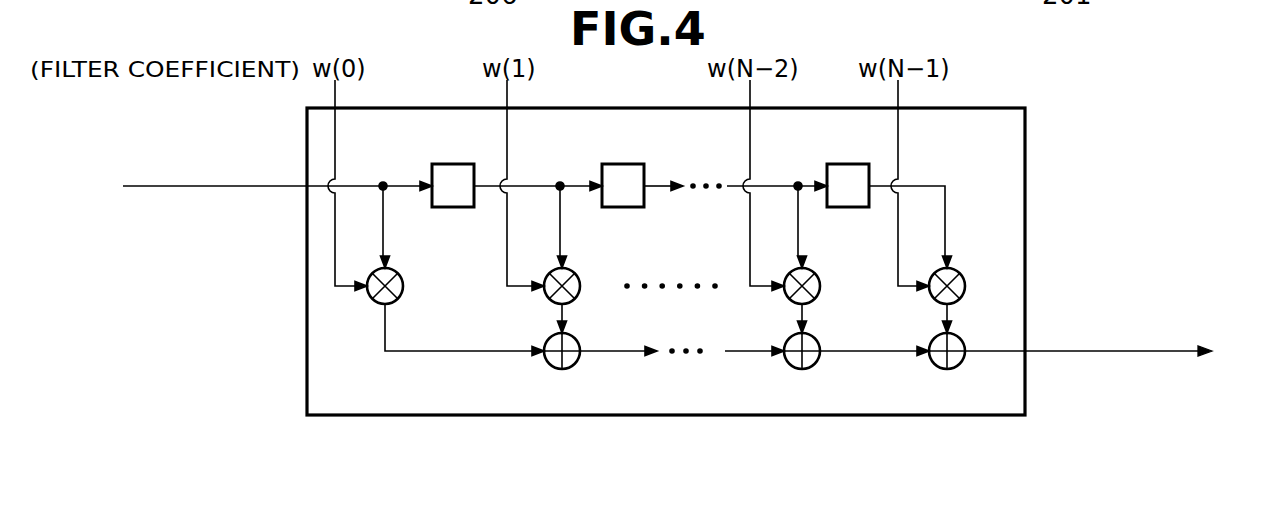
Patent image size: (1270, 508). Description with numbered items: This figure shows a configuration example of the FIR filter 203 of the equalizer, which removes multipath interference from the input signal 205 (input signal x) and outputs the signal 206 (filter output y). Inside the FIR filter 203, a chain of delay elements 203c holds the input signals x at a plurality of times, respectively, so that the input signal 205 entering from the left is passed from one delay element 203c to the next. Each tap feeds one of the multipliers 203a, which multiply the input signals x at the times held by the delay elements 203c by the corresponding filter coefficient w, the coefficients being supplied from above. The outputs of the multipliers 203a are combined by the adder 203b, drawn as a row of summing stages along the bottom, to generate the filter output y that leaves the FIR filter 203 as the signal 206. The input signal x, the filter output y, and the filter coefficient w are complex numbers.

The FIR filter 203 is at (307, 393).
The multipliers 203a is at (402, 277).
The adder 203b is at (576, 366).
The delay elements 203c is at (432, 163).
The input signal 205 is at (200, 189).
The signal 206 is at (1133, 354).